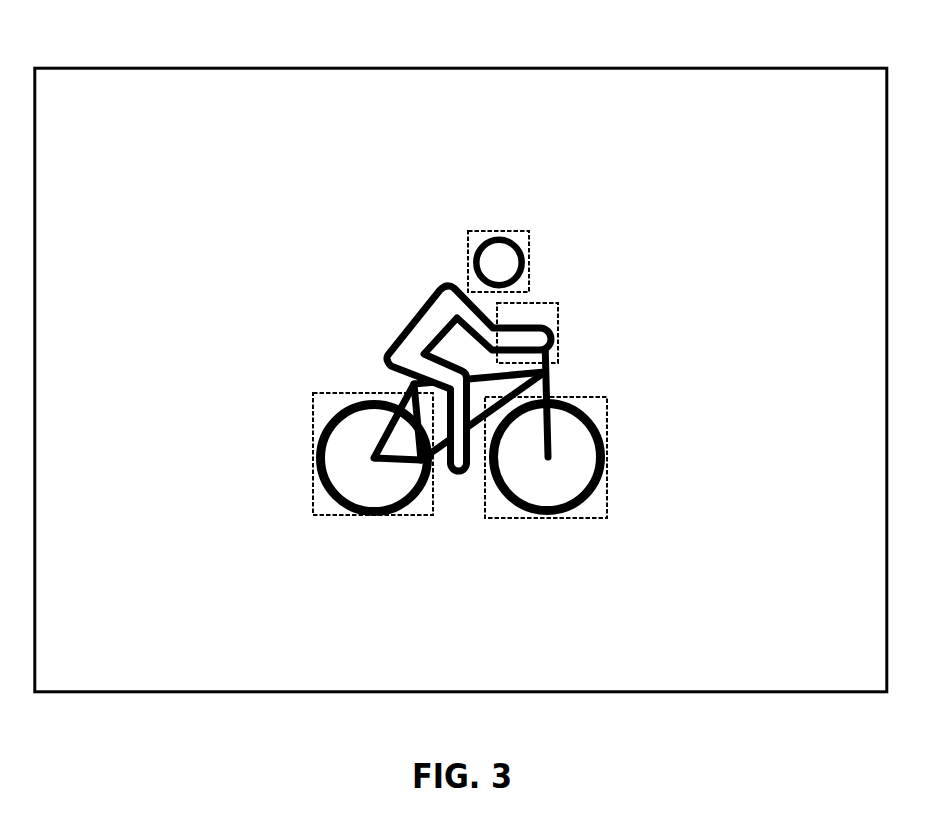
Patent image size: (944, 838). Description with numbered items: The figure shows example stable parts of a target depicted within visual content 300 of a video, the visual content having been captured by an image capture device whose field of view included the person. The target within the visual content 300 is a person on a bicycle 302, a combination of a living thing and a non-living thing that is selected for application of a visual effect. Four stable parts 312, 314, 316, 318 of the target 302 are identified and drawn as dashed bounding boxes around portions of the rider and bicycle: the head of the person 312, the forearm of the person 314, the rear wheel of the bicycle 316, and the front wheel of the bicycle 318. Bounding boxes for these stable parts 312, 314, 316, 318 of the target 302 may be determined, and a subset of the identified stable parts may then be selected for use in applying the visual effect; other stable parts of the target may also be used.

The visual content 300 is at (461, 35).
The person on a bicycle 302 is at (357, 271).
The stable part (head of the person) 312 is at (527, 232).
The stable part (forearm of the person) 314 is at (557, 307).
The stable part (rear wheel of the bicycle) 316 is at (313, 515).
The stable part (front wheel of the bicycle) 318 is at (487, 517).